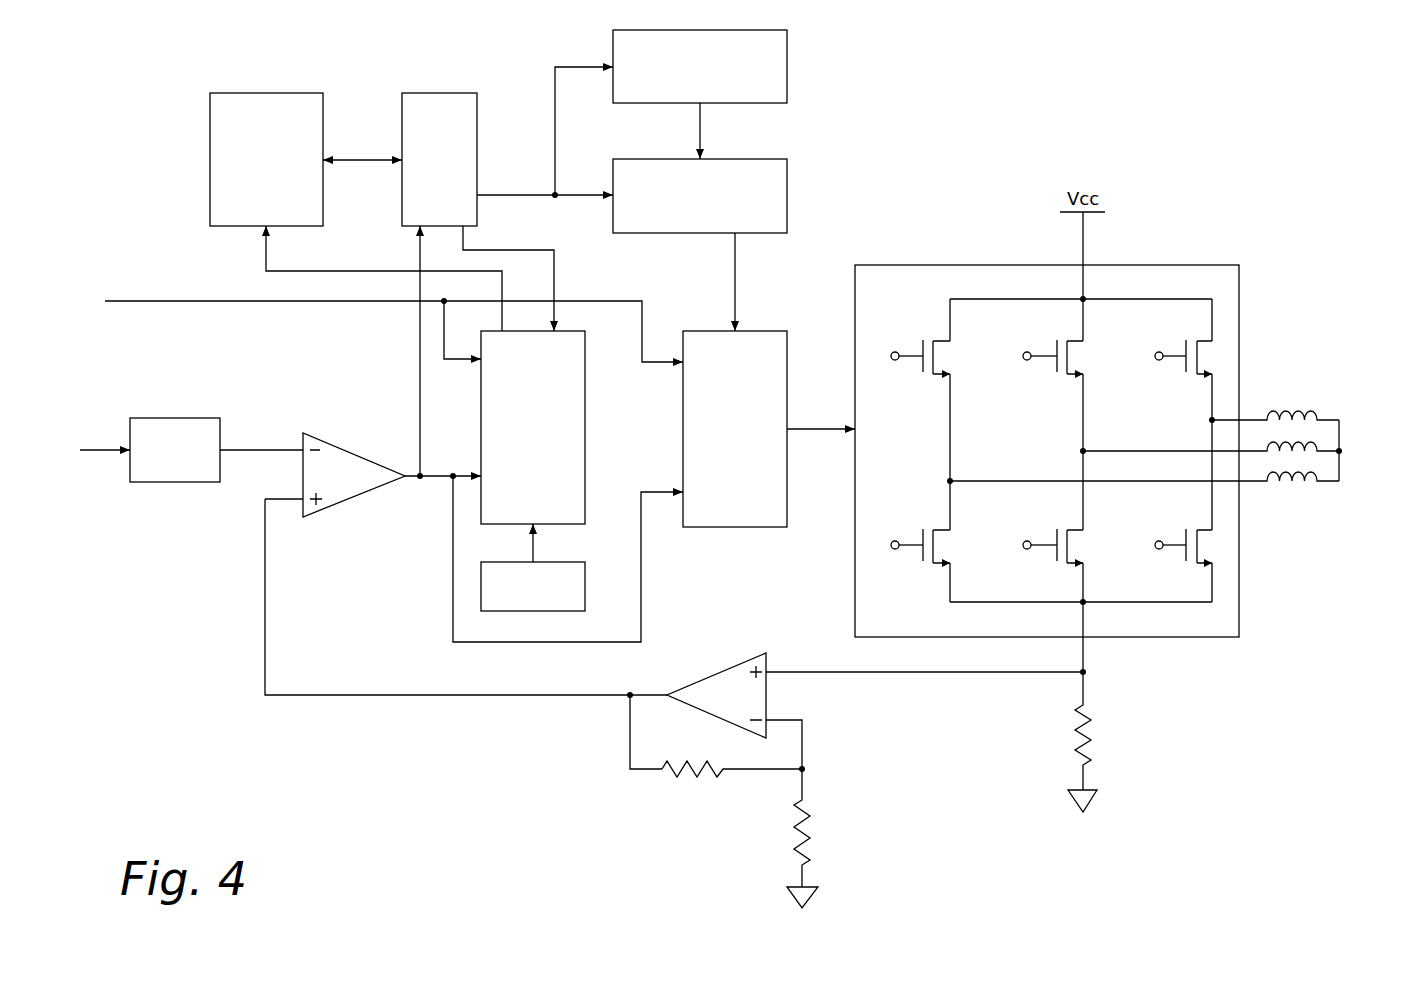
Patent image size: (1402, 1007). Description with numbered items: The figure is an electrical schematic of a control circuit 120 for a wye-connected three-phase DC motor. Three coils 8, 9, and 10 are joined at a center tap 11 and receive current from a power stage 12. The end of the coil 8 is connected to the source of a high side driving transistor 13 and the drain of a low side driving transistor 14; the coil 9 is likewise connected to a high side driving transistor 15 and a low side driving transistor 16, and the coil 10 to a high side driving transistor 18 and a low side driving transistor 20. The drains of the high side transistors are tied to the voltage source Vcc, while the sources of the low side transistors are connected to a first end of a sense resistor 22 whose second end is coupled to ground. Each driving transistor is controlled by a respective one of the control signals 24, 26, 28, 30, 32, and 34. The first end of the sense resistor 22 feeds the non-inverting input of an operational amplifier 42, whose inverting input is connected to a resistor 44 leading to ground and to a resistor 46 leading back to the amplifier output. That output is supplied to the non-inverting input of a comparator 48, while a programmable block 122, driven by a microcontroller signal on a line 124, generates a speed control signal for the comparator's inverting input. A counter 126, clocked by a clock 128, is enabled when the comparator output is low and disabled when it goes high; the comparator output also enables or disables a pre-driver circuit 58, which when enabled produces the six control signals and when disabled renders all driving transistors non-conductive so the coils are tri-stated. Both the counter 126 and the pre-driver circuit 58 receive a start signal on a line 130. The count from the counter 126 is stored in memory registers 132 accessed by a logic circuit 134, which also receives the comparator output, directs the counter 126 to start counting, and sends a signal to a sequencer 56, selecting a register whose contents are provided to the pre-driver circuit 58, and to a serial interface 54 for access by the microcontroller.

The coil 8 is at (1274, 412).
The coil 9 is at (1320, 442).
The coil 10 is at (1292, 483).
The center tap 11 is at (1341, 453).
The power stage 12 is at (1185, 638).
The high side driving transistor 13 is at (1196, 338).
The low side driving transistor 14 is at (1196, 527).
The high side driving transistor 15 is at (1065, 338).
The low side driving transistor 16 is at (1065, 527).
The high side driving transistor 18 is at (932, 338).
The low side driving transistor 20 is at (932, 527).
The sense resistor 22 is at (1090, 737).
The control signal 24 is at (1156, 357).
The control signal 26 is at (1154, 546).
The control signal 28 is at (1025, 357).
The control signal 30 is at (1025, 546).
The control signal 32 is at (892, 357).
The control signal 34 is at (892, 546).
The operational amplifier 42 is at (714, 673).
The resistor 44 is at (812, 835).
The resistor 46 is at (685, 777).
The comparator 48 is at (355, 498).
The serial interface 54 is at (787, 72).
The sequencer 56 is at (787, 184).
The pre-driver circuit 58 is at (723, 527).
The control circuit 120 is at (1106, 128).
The programmable block 122 is at (183, 483).
The line 124 is at (98, 458).
The counter 126 is at (585, 404).
The clock 128 is at (585, 572).
The line 130 is at (184, 302).
The memory registers 132 is at (210, 97).
The logic circuit 134 is at (402, 96).